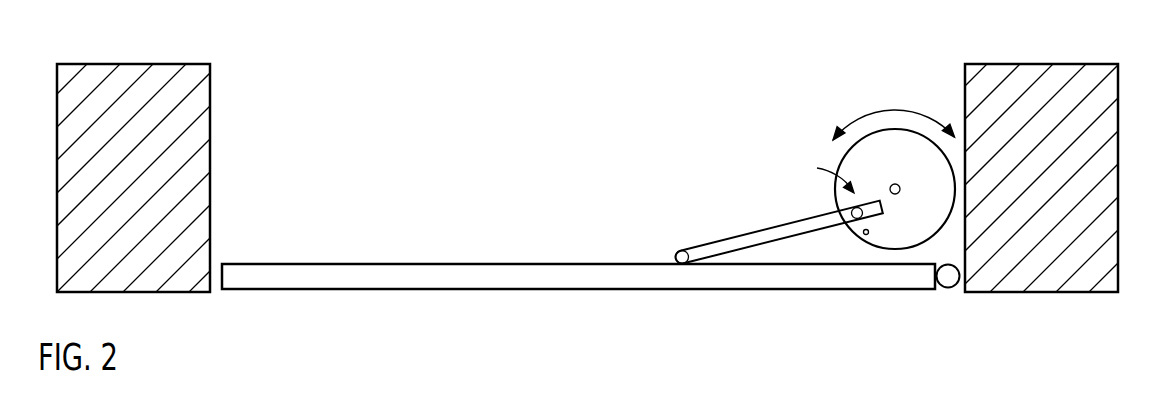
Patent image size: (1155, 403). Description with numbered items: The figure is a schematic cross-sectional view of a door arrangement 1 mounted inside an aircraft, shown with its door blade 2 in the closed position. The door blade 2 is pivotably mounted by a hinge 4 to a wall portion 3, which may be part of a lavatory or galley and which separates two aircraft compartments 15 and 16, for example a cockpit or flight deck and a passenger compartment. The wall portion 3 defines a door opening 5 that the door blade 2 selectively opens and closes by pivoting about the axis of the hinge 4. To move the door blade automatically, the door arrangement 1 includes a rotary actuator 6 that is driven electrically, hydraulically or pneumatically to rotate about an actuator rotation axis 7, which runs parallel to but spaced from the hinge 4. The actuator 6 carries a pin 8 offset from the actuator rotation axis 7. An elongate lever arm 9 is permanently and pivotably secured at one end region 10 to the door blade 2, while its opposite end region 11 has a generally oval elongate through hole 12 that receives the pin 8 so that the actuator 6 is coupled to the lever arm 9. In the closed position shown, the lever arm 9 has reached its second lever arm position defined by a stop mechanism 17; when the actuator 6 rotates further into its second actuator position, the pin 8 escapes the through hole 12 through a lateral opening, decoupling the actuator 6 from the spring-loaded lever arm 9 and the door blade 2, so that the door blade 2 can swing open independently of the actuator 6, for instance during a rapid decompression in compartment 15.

The door arrangement 1 is at (433, 61).
The door blade 2 is at (417, 289).
The wall portion 3 is at (126, 185).
The hinge 4 is at (948, 293).
The door opening 5 is at (210, 293).
The rotary actuator 6 is at (893, 140).
The actuator rotation axis 7 is at (901, 188).
The pin 8 is at (869, 232).
The lever arm 9 is at (748, 238).
The end region 10 is at (679, 246).
The opposite end region 11 is at (826, 168).
The elongate through hole 12 is at (858, 220).
The aircraft compartment 15 is at (533, 70).
The aircraft compartment 16 is at (533, 346).
The stop mechanism 17 is at (857, 217).